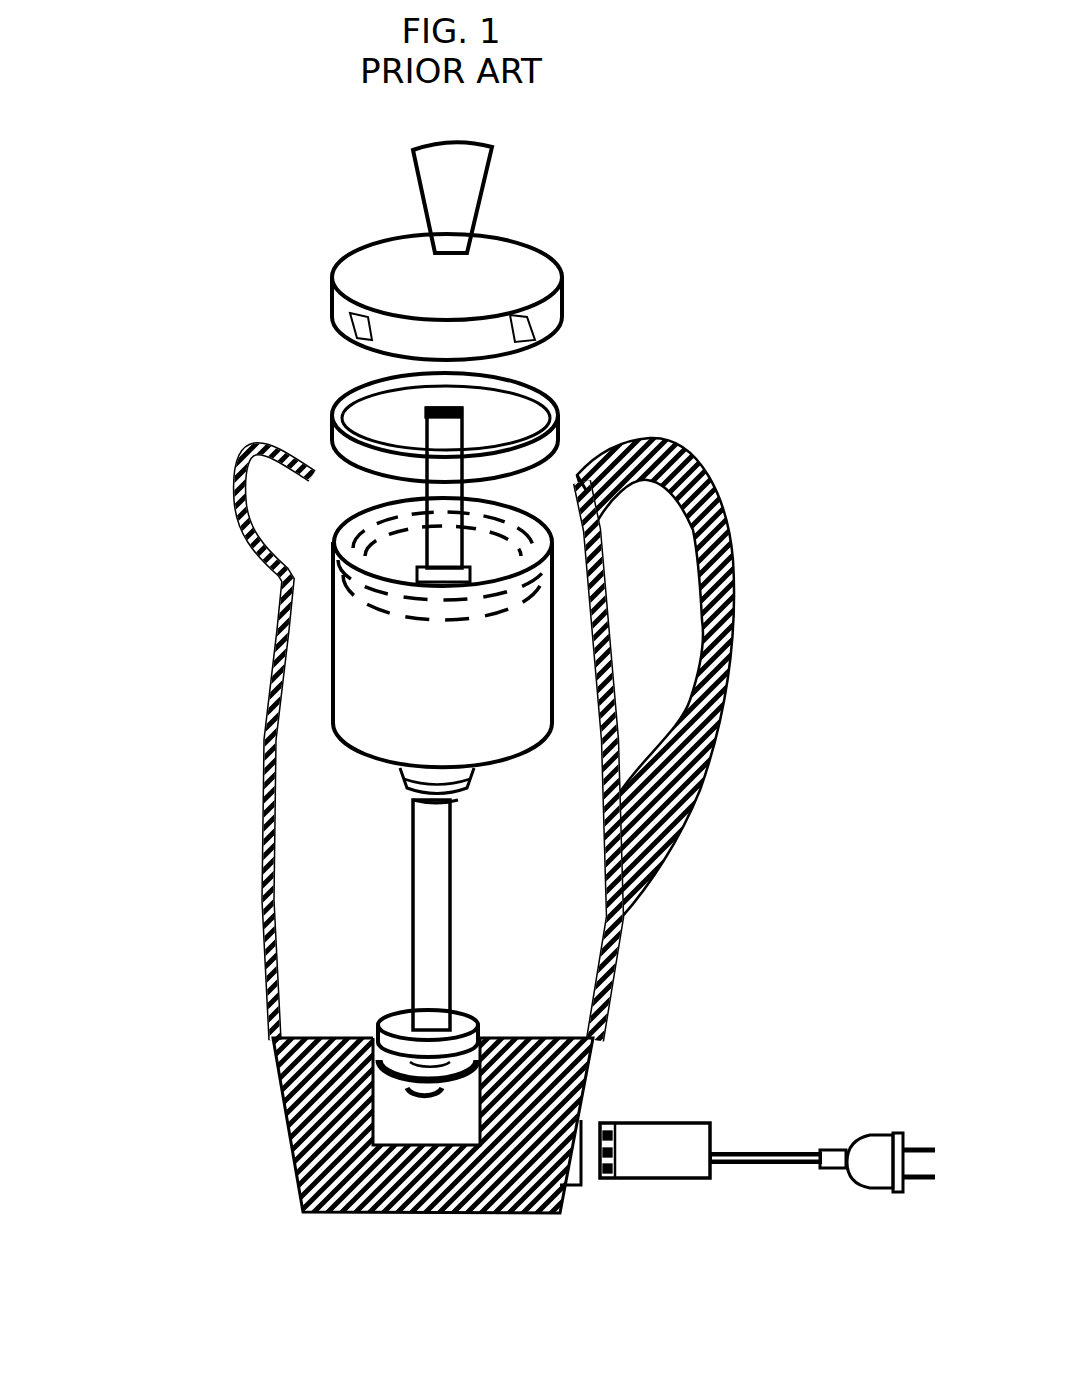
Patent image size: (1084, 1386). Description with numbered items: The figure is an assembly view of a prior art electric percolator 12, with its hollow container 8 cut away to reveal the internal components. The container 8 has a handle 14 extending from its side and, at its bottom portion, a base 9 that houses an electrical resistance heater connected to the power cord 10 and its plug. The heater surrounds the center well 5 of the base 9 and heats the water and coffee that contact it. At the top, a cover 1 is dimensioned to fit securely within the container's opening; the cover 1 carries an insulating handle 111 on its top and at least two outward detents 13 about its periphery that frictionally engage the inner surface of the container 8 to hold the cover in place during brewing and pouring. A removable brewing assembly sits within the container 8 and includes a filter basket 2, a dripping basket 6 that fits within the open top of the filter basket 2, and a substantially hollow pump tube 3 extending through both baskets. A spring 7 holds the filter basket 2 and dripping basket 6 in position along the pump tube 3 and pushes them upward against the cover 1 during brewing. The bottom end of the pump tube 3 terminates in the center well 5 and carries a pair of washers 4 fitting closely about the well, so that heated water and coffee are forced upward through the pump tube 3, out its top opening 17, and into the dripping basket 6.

The cover 1 is at (372, 272).
The knob 111 is at (458, 170).
The outward detents 13 is at (360, 325).
The conventional percolator 12 is at (645, 288).
The top opening 17 is at (425, 408).
The dripping basket 6 is at (560, 412).
The base 9 is at (577, 478).
The handle 14 is at (733, 585).
The filter basket 2 is at (370, 630).
The spring 7 is at (470, 790).
The pump tube 3 is at (430, 838).
The hollow container 8 is at (622, 975).
The washers 4 is at (373, 1087).
The center well 5 is at (427, 1120).
The power cord 10 is at (757, 1147).